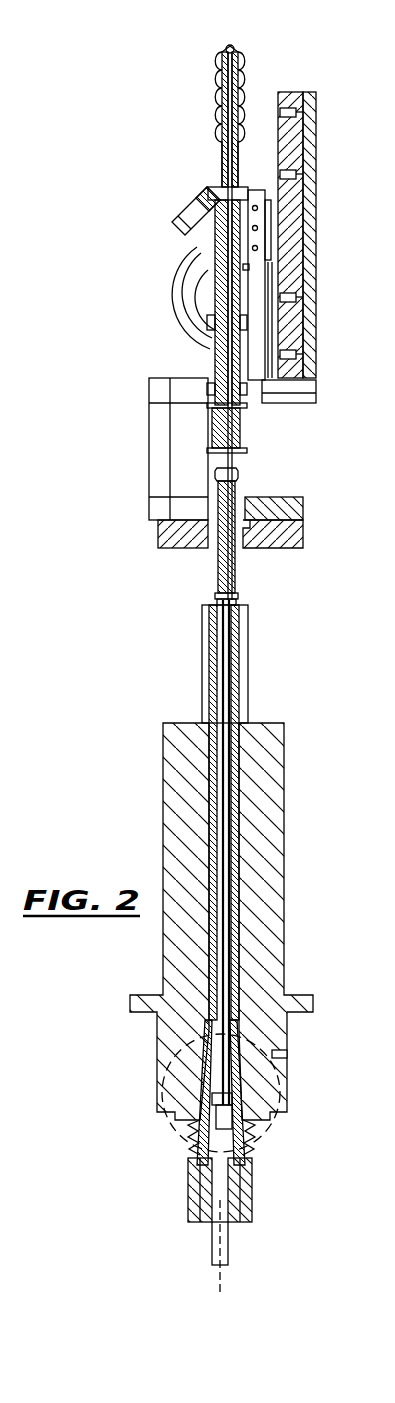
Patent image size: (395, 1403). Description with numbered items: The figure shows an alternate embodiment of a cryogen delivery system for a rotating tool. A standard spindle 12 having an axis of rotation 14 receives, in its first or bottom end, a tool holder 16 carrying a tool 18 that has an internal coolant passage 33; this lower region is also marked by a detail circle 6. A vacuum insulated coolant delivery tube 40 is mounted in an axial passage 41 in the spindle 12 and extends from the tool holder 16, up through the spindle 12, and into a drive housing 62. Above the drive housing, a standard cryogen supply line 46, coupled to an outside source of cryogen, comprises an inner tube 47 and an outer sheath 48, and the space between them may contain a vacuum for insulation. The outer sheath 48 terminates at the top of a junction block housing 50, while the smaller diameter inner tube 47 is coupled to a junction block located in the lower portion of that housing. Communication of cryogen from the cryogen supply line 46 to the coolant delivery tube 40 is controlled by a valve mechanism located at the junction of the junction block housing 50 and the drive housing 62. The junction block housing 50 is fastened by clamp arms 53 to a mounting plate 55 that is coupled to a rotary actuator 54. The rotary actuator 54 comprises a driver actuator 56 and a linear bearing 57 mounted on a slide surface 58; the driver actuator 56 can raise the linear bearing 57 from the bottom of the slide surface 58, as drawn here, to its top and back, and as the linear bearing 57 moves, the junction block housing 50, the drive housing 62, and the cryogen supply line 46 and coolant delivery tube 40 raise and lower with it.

The detail circle 6 is at (178, 1142).
The spindle 12 is at (284, 767).
The axis of rotation 14 is at (222, 1290).
The tool holder 16 is at (248, 1157).
The tool 18 is at (212, 1258).
The internal coolant passage 33 is at (218, 1238).
The coolant delivery tube 40 is at (197, 567).
The axial passage 41 is at (232, 852).
The cryogen supply line 46 is at (196, 106).
The inner tube 47 is at (231, 49).
The outer sheath 48 is at (217, 137).
The junction block housing 50 is at (216, 352).
The clamp arms 53 is at (207, 322).
The rotary actuator 54 is at (174, 246).
The mounting plate 55 is at (256, 269).
The driver actuator 56 is at (197, 278).
The linear bearing 57 is at (266, 338).
The slide surface 58 is at (278, 102).
The drive housing 62 is at (198, 439).